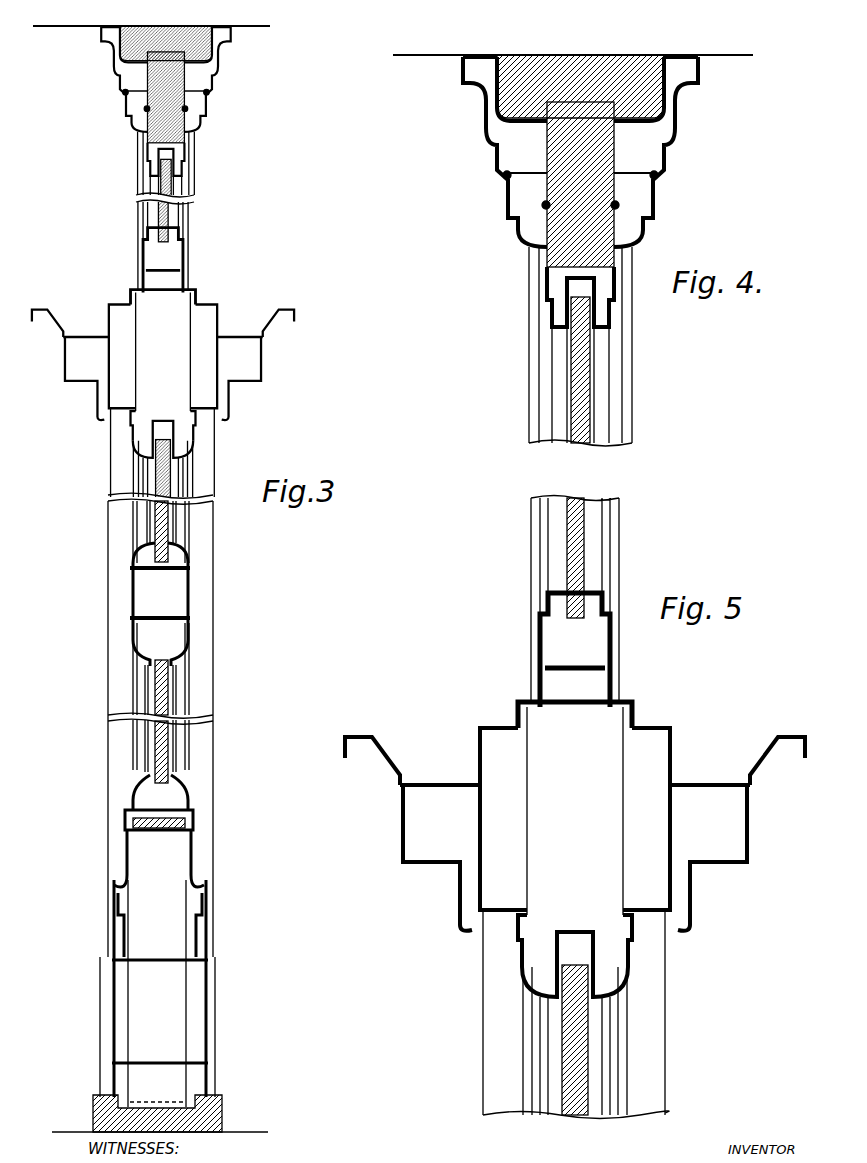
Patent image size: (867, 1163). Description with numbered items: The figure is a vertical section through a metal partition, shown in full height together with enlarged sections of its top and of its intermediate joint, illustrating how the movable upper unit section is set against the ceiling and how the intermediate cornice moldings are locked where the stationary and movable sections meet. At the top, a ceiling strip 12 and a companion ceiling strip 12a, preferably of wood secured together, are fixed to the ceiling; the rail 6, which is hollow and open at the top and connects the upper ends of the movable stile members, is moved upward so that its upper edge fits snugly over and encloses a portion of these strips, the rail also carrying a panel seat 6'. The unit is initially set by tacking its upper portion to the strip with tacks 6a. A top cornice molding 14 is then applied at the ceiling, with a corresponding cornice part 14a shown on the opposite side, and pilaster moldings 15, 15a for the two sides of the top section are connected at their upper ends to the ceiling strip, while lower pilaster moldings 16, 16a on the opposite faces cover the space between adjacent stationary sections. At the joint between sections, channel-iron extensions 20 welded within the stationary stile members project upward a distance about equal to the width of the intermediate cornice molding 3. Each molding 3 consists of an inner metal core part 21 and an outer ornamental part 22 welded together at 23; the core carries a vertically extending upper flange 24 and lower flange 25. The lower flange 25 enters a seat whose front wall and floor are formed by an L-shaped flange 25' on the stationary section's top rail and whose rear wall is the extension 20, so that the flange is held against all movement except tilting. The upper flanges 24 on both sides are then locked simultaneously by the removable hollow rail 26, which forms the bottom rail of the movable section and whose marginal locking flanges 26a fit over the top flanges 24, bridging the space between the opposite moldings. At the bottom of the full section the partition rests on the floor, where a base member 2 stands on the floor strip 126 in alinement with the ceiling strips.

In FIG. 3, the base 2 is at (185, 1107).
In FIG. 5, the intermediate cornice molding 3 is at (575, 858).
In FIG. 3, the intermediate cornice molding 3 is at (163, 378).
In FIG. 4, the rail 6 is at (547, 354).
In FIG. 3, the rail 6 is at (139, 191).
In FIG. 4, the panel seat 6' is at (613, 366).
In FIG. 3, the panel seat 6' is at (193, 192).
In FIG. 4, the tack 6a is at (548, 204).
In FIG. 3, the tack 6a is at (135, 128).
In FIG. 4, the ceiling strip 12 is at (655, 90).
In FIG. 3, the ceiling strip 12 is at (222, 63).
In FIG. 4, the ceiling strip 12a is at (605, 146).
In FIG. 3, the ceiling strip 12a is at (200, 134).
In FIG. 4, the top cornice molding 14 is at (490, 143).
In FIG. 3, the top cornice molding 14 is at (222, 56).
In FIG. 4, the ring 14a is at (612, 173).
In FIG. 3, the ring 14a is at (183, 86).
In FIG. 4, the pilaster molding 15 is at (529, 380).
In FIG. 3, the pilaster molding 15 is at (136, 227).
In FIG. 4, the tube 15a is at (627, 398).
In FIG. 3, the tube 15a is at (196, 240).
In FIG. 5, the lower pilaster molding 16 is at (497, 1058).
In FIG. 3, the lower pilaster molding 16 is at (112, 598).
In FIG. 5, the outer tube 16a is at (660, 1050).
In FIG. 3, the outer tube 16a is at (212, 603).
In FIG. 5, the channel-iron extension 20 is at (610, 772).
In FIG. 5, the inner metal core part 21 is at (675, 812).
In FIG. 3, the inner metal core part 21 is at (163, 357).
In FIG. 5, the outer ornamental molding part 22 is at (392, 803).
In FIG. 3, the outer ornamental molding part 22 is at (62, 348).
In FIG. 5, the weld 23 is at (483, 784).
In FIG. 3, the weld 23 is at (126, 337).
In FIG. 3, the upper flange 24 is at (140, 307).
In FIG. 5, the lower flange 25 is at (575, 947).
In FIG. 3, the lower flange 25 is at (137, 429).
In FIG. 5, the L-shaped flange 25' is at (575, 941).
In FIG. 3, the L-shaped flange 25' is at (193, 426).
In FIG. 5, the removable rail 26 is at (537, 648).
In FIG. 3, the removable rail 26 is at (147, 261).
In FIG. 5, the locking flange 26a is at (519, 717).
In FIG. 3, the locking flange 26a is at (130, 294).
In FIG. 3, the floor 126 is at (210, 1130).